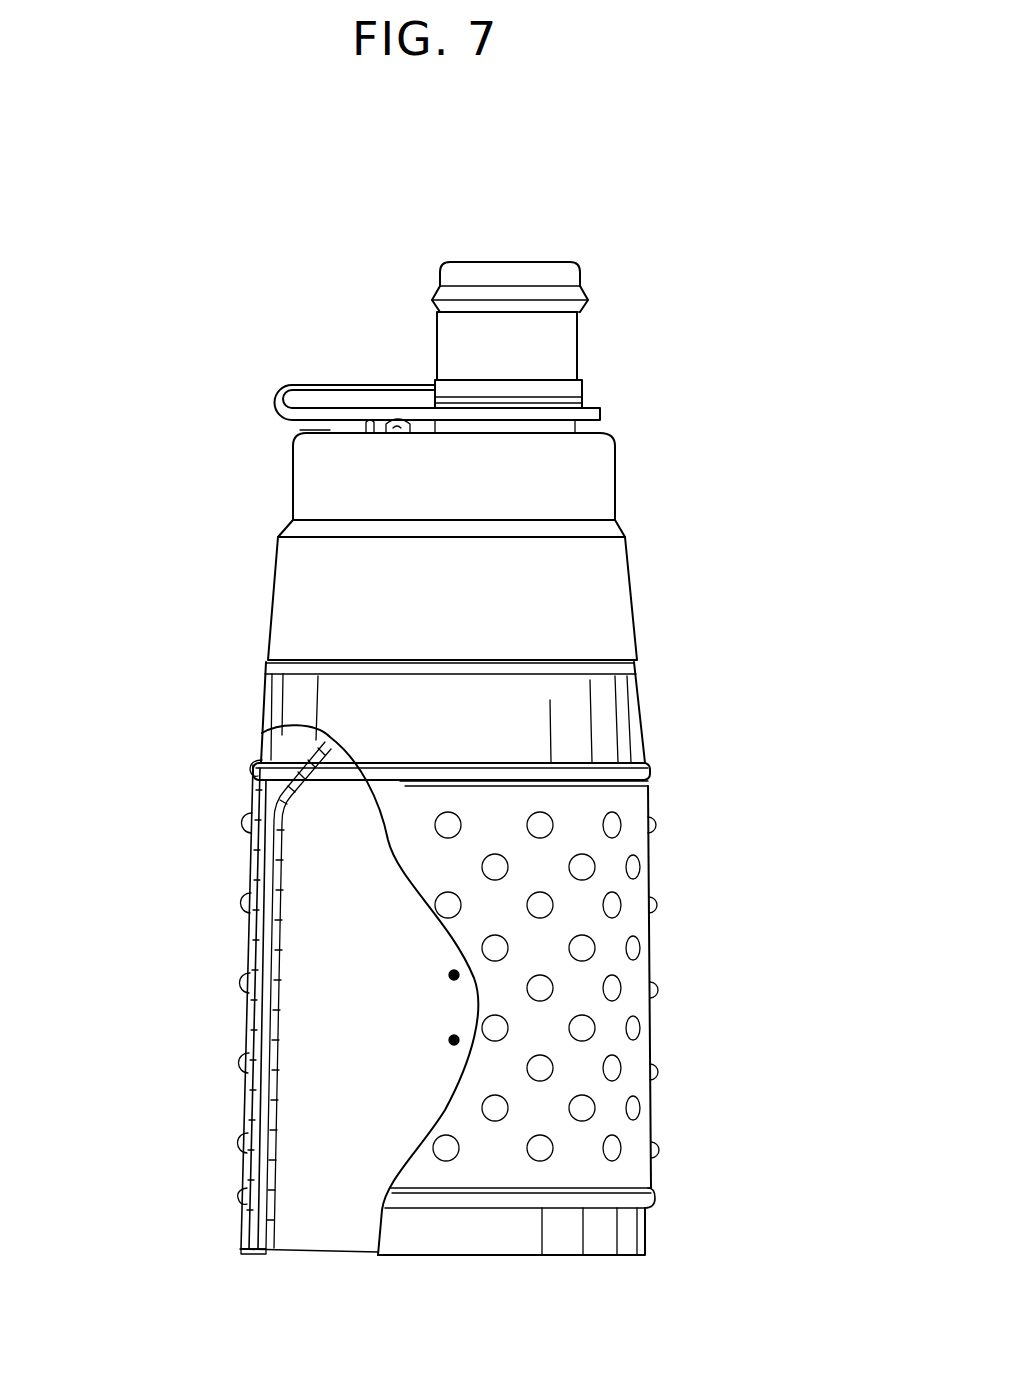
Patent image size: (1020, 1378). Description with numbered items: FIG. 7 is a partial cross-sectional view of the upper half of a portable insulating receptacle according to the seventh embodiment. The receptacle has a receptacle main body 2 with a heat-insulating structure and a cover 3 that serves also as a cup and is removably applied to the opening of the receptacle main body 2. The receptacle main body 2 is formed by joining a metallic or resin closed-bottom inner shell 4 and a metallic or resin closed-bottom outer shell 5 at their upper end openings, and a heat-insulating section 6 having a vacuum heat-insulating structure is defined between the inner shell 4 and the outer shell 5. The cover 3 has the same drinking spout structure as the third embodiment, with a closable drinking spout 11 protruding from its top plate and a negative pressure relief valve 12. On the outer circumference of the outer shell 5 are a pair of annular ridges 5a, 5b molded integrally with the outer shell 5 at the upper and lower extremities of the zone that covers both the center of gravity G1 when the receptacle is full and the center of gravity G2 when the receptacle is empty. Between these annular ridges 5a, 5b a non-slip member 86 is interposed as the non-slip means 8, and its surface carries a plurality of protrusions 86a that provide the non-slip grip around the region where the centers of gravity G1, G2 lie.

The drinking spout 11 is at (565, 270).
The negative pressure relief valve 12 is at (398, 420).
The cover 3 is at (625, 582).
The receptacle main body 2 is at (660, 721).
The non-slip means 8 is at (667, 1025).
The non-slip member 86 is at (648, 858).
The protrusions 86a is at (656, 896).
The center of gravity when the receptacle is full G1 is at (454, 1040).
The center of gravity when the receptacle is empty G2 is at (454, 975).
The inner shell 4 is at (268, 1118).
The outer shell 5 is at (238, 1223).
The annular ridge 5a is at (252, 764).
The annular ridge 5b is at (236, 1193).
The heat-insulating section 6 is at (247, 1255).